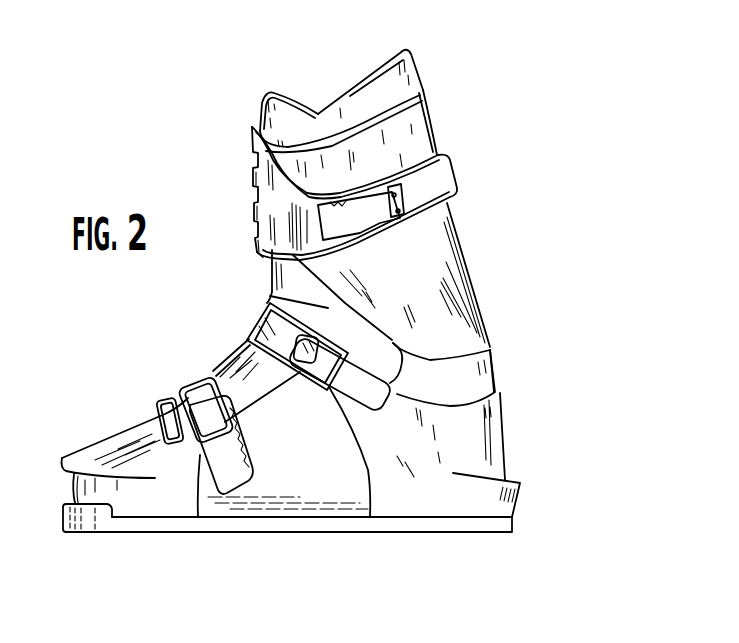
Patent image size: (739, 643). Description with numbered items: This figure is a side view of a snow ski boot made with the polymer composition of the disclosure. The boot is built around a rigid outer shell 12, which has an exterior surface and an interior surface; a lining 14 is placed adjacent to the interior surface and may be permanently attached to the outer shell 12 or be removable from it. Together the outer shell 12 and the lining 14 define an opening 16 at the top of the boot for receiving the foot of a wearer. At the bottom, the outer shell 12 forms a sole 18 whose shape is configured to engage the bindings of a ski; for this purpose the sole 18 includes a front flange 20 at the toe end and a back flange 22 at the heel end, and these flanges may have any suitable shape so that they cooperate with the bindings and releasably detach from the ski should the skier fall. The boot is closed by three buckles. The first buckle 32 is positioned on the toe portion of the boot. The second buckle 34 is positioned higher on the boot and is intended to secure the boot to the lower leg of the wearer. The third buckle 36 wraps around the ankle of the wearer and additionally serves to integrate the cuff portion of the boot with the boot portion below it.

The outer shell 12 is at (128, 435).
The lining 14 is at (373, 83).
The opening 16 is at (372, 130).
The sole 18 is at (295, 522).
The front flange 20 is at (68, 518).
The back flange 22 is at (517, 497).
The first buckle 32 is at (210, 455).
The second buckle 34 is at (452, 194).
The third buckle 36 is at (355, 384).